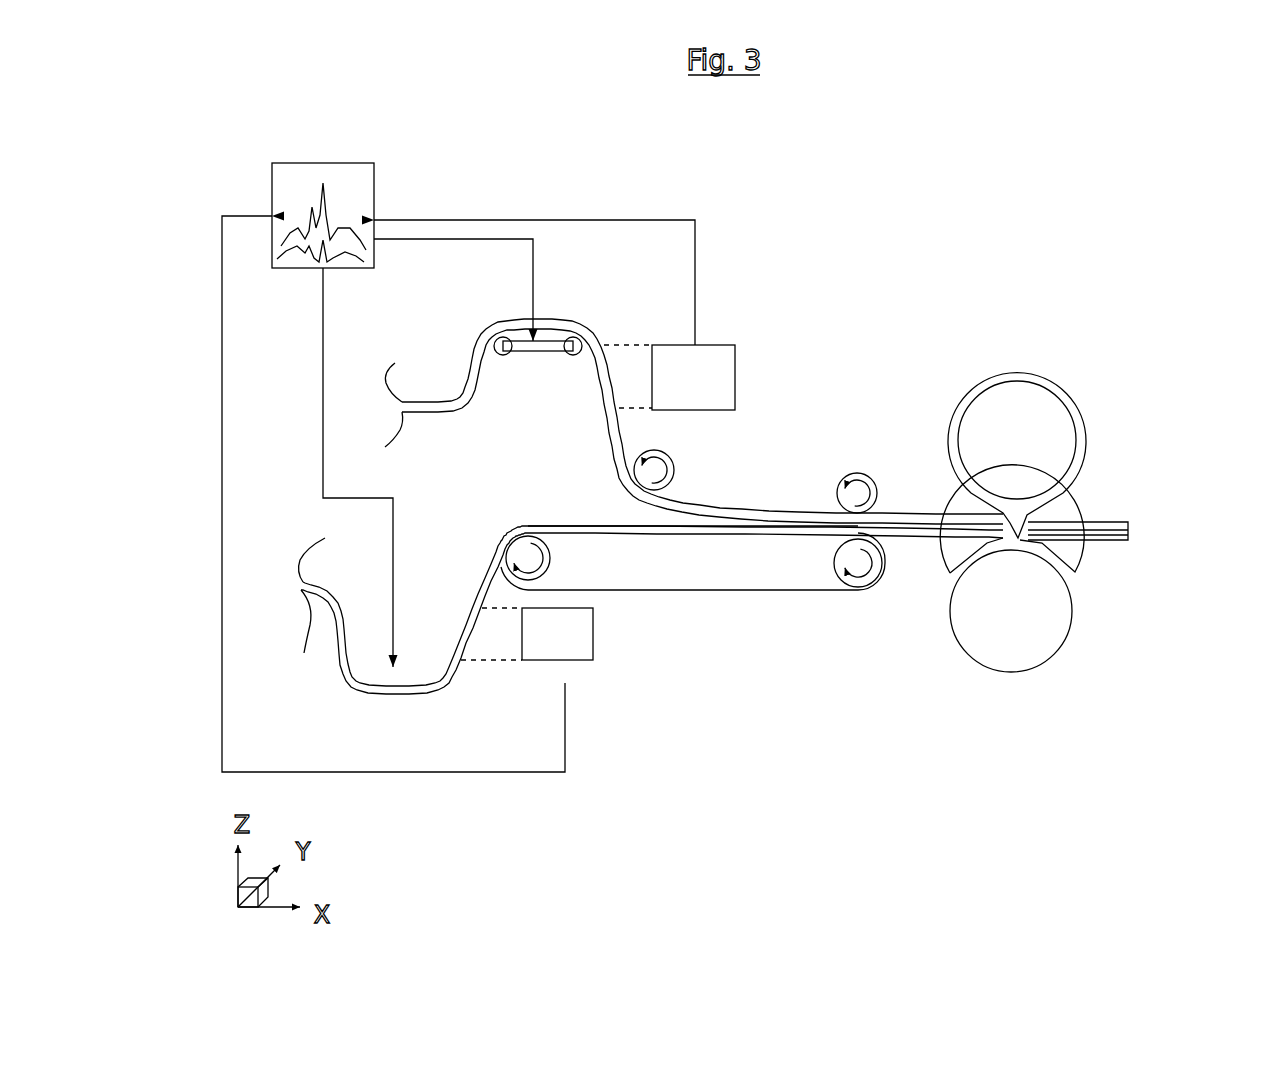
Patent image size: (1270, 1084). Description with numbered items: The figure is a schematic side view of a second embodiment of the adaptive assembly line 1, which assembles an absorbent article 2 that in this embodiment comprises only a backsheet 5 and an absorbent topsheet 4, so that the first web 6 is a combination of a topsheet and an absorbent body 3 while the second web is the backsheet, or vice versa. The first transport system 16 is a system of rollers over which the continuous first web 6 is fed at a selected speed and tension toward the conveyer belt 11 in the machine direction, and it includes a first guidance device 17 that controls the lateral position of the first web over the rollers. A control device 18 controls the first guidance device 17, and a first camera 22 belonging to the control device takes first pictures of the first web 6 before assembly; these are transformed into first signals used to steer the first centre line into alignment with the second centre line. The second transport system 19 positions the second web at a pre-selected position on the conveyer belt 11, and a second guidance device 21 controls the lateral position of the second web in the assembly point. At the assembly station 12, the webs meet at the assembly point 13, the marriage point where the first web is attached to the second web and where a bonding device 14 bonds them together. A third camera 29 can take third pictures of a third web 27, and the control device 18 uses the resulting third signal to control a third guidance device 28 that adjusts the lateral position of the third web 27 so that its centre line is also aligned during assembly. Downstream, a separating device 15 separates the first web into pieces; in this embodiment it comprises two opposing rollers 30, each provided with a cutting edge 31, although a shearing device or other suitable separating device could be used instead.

The adaptive assembly line 1 is at (1068, 205).
The absorbent article 2 is at (1098, 515).
The absorbent body 3 is at (1117, 522).
The topsheet 4 is at (1077, 515).
The backsheet 5 is at (1123, 540).
The first web 6 is at (453, 393).
The conveyer belt 11 is at (673, 592).
The assembly station 12 is at (813, 442).
The assembly point 13 is at (867, 518).
The bonding device 14 is at (855, 468).
The separating device 15 is at (1047, 688).
The first transport system 16 is at (577, 320).
The first guidance device 17 is at (542, 358).
The control device 18 is at (367, 206).
The second transport system 19 is at (432, 478).
The second guidance device 21 is at (490, 523).
The first camera 22 is at (680, 394).
The third web 27 is at (338, 672).
The third guidance device 28 is at (403, 695).
The third camera 29 is at (543, 646).
The opposing rollers 30 is at (1002, 464).
The cutting edge 31 is at (1033, 532).